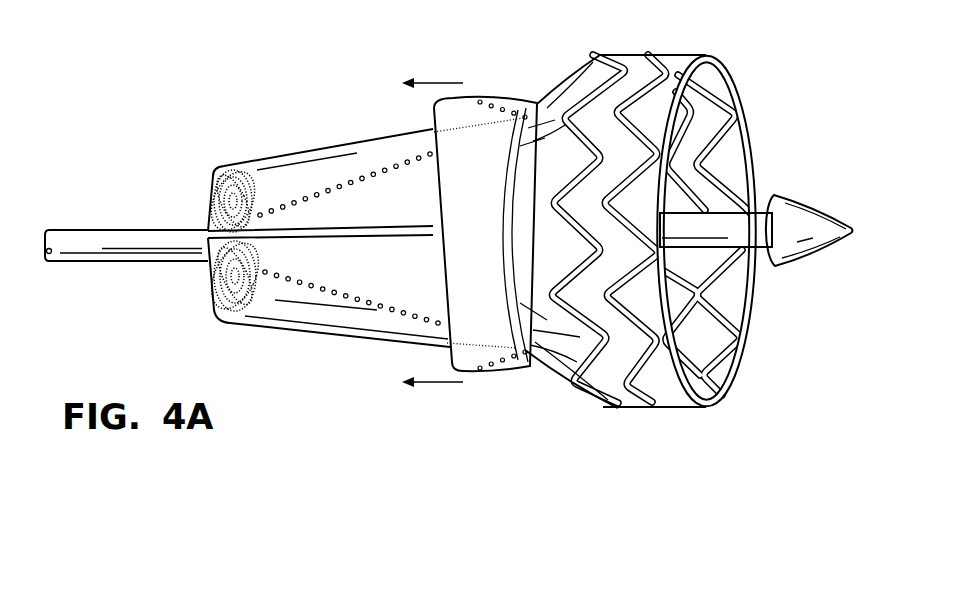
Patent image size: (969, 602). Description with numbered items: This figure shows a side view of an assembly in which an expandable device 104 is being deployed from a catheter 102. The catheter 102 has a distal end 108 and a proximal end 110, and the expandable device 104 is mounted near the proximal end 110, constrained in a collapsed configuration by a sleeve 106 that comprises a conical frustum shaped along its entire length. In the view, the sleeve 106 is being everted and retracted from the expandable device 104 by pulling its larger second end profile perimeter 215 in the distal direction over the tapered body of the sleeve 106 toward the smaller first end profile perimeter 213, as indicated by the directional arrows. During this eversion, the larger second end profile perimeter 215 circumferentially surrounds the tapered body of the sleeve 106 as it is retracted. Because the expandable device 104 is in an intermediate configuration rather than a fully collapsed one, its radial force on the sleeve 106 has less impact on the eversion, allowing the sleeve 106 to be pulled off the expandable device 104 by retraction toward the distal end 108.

The catheter 102 is at (168, 257).
The expandable device 104 is at (636, 57).
The sleeve 106 is at (368, 332).
The distal end 108 is at (31, 268).
The proximal end 110 is at (853, 268).
The smaller first end profile perimeter 213 is at (212, 298).
The larger second end profile perimeter 215 is at (432, 198).